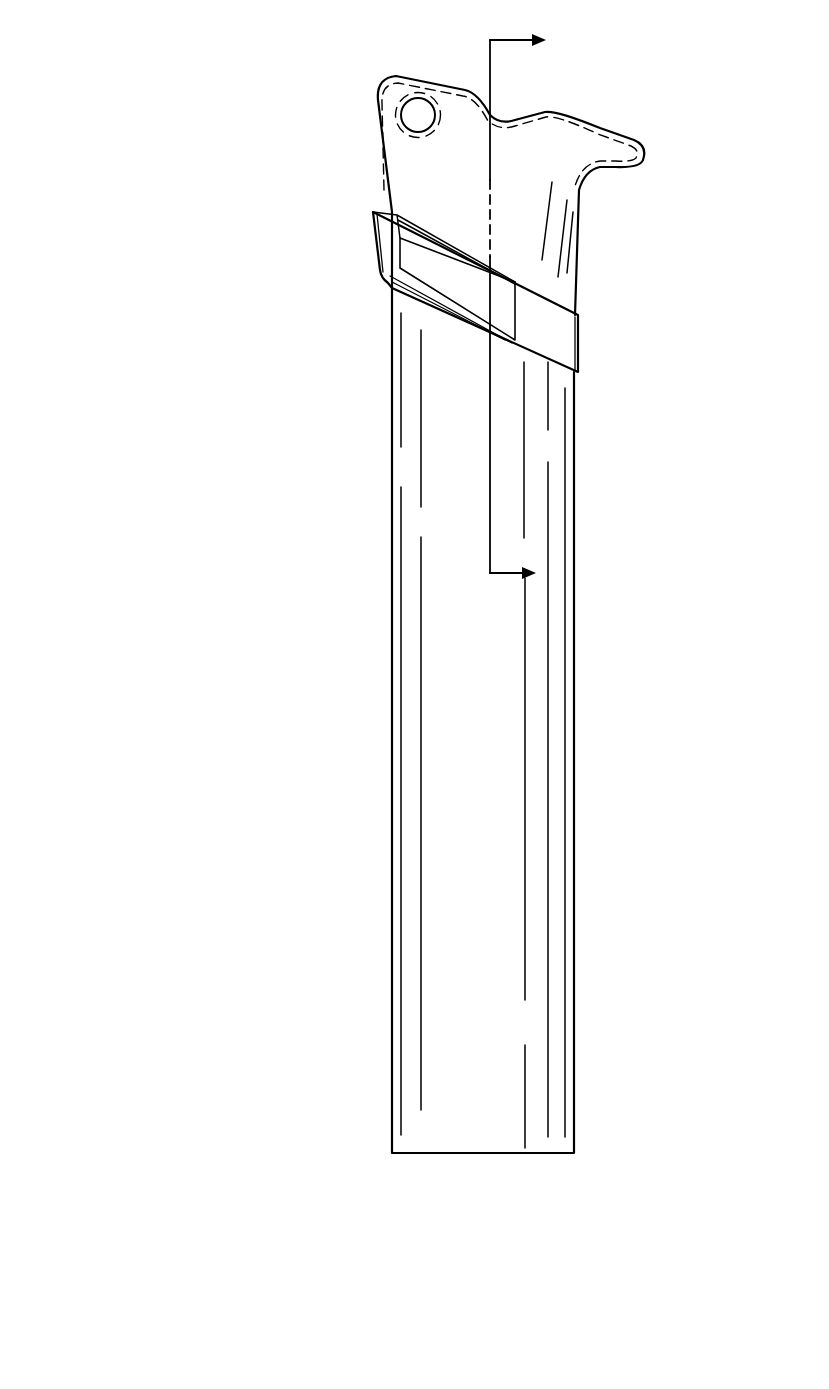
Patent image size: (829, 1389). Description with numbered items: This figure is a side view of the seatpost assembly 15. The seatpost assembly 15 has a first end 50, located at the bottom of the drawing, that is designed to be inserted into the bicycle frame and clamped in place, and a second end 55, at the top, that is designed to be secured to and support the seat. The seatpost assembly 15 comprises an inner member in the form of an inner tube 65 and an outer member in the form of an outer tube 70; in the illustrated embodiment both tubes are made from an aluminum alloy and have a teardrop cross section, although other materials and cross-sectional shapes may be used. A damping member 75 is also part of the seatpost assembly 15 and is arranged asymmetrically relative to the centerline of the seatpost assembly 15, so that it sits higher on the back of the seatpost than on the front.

The seatpost assembly 15 is at (198, 282).
The first end 50 is at (577, 1102).
The second end 55 is at (645, 140).
The inner tube 65 is at (575, 267).
The outer tube 70 is at (577, 710).
The damping member 75 is at (578, 340).